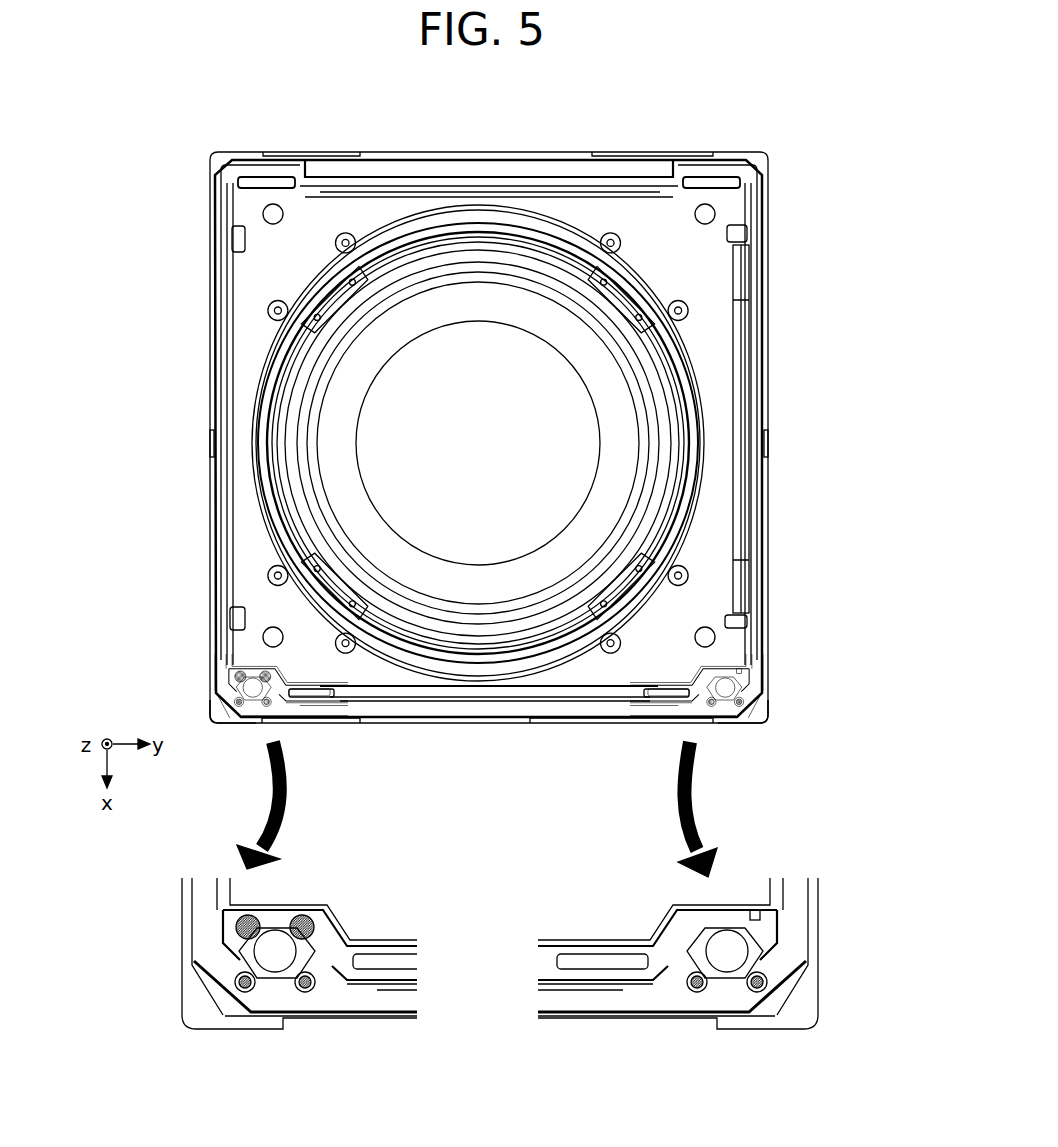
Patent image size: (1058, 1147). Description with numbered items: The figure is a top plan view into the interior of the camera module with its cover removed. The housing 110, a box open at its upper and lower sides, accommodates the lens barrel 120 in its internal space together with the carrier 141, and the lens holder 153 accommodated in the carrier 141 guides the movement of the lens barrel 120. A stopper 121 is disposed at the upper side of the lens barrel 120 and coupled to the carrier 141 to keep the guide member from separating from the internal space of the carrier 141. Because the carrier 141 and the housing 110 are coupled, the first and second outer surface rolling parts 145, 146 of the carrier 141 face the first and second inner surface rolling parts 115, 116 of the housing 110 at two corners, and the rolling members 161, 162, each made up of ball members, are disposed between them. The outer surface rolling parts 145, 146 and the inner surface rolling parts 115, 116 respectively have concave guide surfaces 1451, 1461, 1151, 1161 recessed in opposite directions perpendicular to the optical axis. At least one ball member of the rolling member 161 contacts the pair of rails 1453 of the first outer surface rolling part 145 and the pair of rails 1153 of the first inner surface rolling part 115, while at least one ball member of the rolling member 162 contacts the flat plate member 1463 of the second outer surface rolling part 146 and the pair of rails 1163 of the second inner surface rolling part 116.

The housing 110 is at (770, 395).
The first inner surface rolling part 115 is at (226, 720).
The second inner surface rolling part 116 is at (731, 720).
The lens barrel 120 is at (483, 300).
The stopper 121 is at (648, 210).
The carrier 141 is at (655, 695).
The first outer surface rolling part 145 is at (214, 665).
The second outer surface rolling part 146 is at (745, 665).
The lens holder 153 is at (388, 228).
The rolling member 161 is at (268, 951).
The rolling member 162 is at (727, 945).
The concave guide surface 1151 is at (313, 966).
The pair of rails 1153 is at (305, 992).
The concave guide surface 1161 is at (688, 968).
The pair of rails 1163 is at (757, 992).
The concave guide surface 1451 is at (290, 946).
The pair of rails 1453 is at (300, 920).
The concave guide surface 1461 is at (760, 955).
The flat plate member 1463 is at (762, 963).